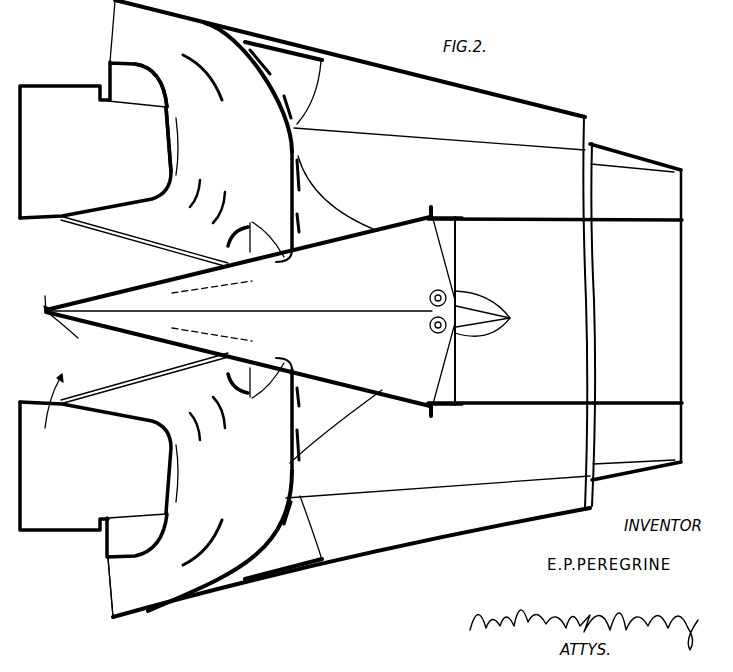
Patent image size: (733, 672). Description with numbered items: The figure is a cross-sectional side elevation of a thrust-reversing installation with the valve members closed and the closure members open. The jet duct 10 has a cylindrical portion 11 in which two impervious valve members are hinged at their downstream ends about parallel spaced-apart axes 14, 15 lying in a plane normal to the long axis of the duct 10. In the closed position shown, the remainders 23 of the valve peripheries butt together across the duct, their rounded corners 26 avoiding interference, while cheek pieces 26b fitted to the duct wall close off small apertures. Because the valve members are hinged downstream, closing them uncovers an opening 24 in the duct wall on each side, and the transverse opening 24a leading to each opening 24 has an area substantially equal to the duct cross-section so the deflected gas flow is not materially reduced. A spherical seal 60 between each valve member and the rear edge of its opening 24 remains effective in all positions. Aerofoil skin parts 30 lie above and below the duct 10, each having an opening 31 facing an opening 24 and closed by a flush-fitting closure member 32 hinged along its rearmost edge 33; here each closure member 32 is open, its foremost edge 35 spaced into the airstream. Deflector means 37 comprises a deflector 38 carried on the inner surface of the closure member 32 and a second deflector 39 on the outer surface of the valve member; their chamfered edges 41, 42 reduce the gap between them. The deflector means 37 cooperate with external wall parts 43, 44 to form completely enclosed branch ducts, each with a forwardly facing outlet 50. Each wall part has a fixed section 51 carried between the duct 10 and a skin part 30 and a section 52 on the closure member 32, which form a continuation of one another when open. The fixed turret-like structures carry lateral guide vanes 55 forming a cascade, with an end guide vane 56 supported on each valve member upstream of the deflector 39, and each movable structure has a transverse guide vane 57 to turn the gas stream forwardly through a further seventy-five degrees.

The jet duct 10 is at (48, 412).
The cylindrical portion 11 is at (80, 231).
The axis 14 is at (434, 292).
The axis 15 is at (434, 331).
The remainder of periphery 23 is at (336, 311).
The opening 24 is at (135, 384).
The opening 24a is at (100, 270).
The corner 26 is at (510, 318).
The cheek piece 26b is at (480, 310).
The aerofoil skin part 30 is at (64, 86).
The opening 31 is at (112, 518).
The closure member 32 is at (366, 61).
The rearmost edge 33 is at (673, 176).
The foremost edge 35 is at (113, 2).
The deflector means 37 is at (287, 187).
The deflector 38 is at (283, 116).
The second deflector 39 is at (292, 200).
The edge 41 is at (299, 156).
The edge 42 is at (284, 146).
The wall part 43 is at (178, 120).
The wall part 44 is at (146, 62).
The forwardly facing outlet 50 is at (110, 604).
The fixed wall part section 51 is at (172, 140).
The closure member wall part section 52 is at (149, 72).
The lateral guide vane 55 is at (215, 214).
The end guide vane 56 is at (229, 242).
The transverse guide vane 57 is at (214, 78).
The spherical seal 60 is at (438, 207).